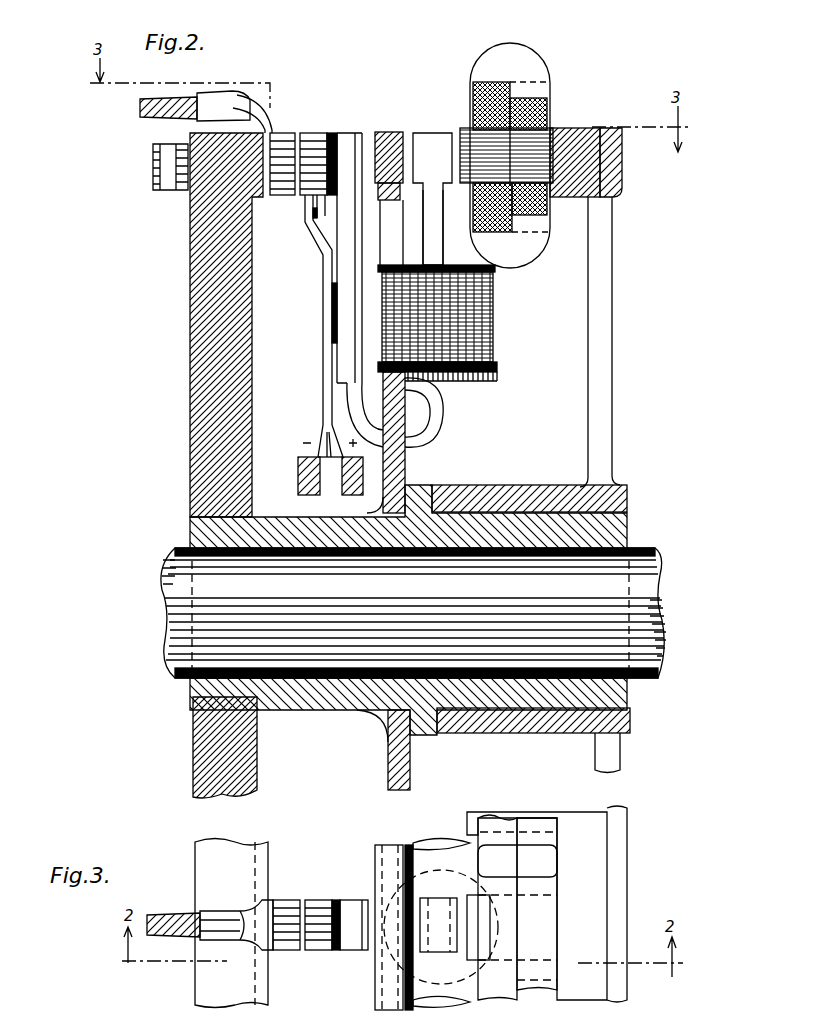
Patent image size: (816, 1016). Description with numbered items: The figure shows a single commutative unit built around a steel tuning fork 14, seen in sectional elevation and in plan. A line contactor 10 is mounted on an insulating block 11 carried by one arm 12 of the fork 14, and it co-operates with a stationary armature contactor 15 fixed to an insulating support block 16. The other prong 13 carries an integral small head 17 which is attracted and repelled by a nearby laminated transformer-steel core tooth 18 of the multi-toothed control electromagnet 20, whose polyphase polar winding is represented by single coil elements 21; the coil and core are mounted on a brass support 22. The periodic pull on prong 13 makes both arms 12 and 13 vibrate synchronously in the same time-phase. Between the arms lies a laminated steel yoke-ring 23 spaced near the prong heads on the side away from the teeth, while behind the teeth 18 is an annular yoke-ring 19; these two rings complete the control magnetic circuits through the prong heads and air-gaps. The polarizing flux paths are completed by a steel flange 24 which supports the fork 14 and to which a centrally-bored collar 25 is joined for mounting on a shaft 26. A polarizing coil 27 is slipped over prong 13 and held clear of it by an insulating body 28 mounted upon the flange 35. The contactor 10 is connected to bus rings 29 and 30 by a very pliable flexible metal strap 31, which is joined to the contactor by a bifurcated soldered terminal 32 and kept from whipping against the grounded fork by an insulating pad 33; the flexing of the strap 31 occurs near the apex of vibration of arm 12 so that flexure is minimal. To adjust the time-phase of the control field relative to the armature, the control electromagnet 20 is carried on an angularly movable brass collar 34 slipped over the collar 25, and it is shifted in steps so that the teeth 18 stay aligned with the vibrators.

In FIG. 2, the line contactor 10 is at (313, 132).
In FIG. 3, the line contactor 10 is at (324, 892).
In FIG. 2, the insulating block 11 is at (333, 131).
In FIG. 3, the insulating block 11 is at (336, 900).
In FIG. 2, the arm of the tuning fork 12 is at (357, 131).
In FIG. 3, the arm of the tuning fork 12 is at (352, 948).
In FIG. 2, the prong of the tuning fork 13 is at (428, 245).
In FIG. 2, the steel tuning fork 14 is at (432, 440).
In FIG. 2, the stationary armature contactor 15 is at (283, 132).
In FIG. 3, the stationary armature contactor 15 is at (288, 900).
In FIG. 2, the insulating support block 16 is at (190, 240).
In FIG. 3, the insulating support block 16 is at (200, 868).
In FIG. 2, the head 17 is at (417, 183).
In FIG. 3, the head 17 is at (440, 898).
In FIG. 2, the core tooth 18 is at (462, 128).
In FIG. 3, the core tooth 18 is at (464, 954).
In FIG. 2, the annular yoke-ring 19 is at (578, 128).
In FIG. 3, the annular yoke-ring 19 is at (583, 815).
In FIG. 2, the control electromagnet 20 is at (525, 150).
In FIG. 3, the control electromagnet 20 is at (537, 907).
In FIG. 2, the coil element 21 is at (550, 103).
In FIG. 3, the coil element 21 is at (540, 862).
In FIG. 2, the brass support 22 is at (622, 197).
In FIG. 3, the brass support 22 is at (630, 898).
In FIG. 2, the yoke-ring 23 is at (392, 132).
In FIG. 3, the yoke-ring 23 is at (392, 843).
In FIG. 2, the steel flange 24 is at (408, 477).
In FIG. 2, the centrally-bored collar 25 is at (628, 527).
In FIG. 2, the shaft 26 is at (653, 578).
In FIG. 2, the polarizing coil 27 is at (494, 315).
In FIG. 2, the insulating body 28 is at (496, 368).
In FIG. 3, the insulating body 28 is at (422, 873).
In FIG. 2, the bus ring 29 is at (340, 495).
In FIG. 2, the bus ring 30 is at (299, 478).
In FIG. 2, the flexible metal strap 31 is at (322, 375).
In FIG. 2, the bifurcated soldered terminal 32 is at (307, 210).
In FIG. 2, the insulating pad 33 is at (331, 300).
In FIG. 2, the angularly movable collar 34 is at (630, 490).
In FIG. 2, the flange 35 is at (475, 381).